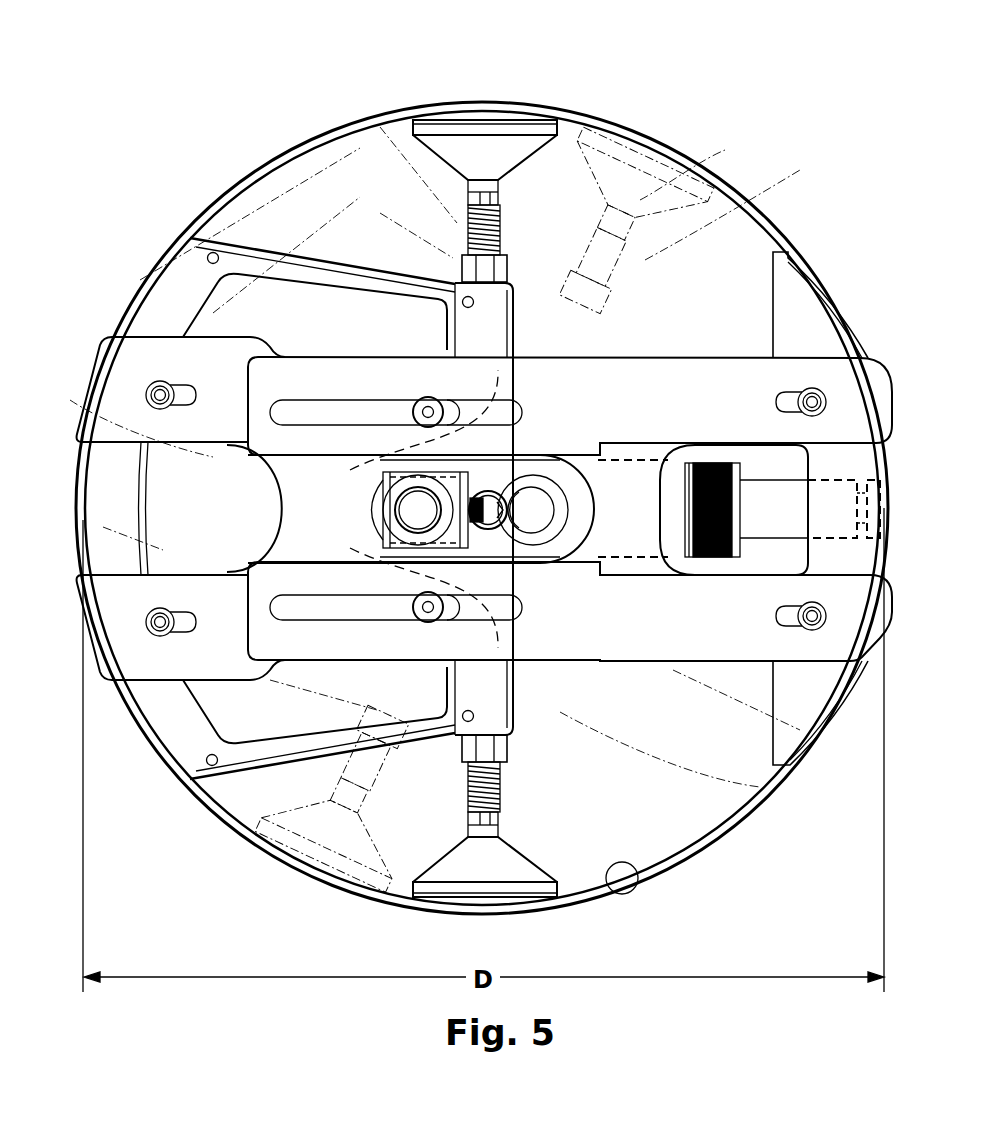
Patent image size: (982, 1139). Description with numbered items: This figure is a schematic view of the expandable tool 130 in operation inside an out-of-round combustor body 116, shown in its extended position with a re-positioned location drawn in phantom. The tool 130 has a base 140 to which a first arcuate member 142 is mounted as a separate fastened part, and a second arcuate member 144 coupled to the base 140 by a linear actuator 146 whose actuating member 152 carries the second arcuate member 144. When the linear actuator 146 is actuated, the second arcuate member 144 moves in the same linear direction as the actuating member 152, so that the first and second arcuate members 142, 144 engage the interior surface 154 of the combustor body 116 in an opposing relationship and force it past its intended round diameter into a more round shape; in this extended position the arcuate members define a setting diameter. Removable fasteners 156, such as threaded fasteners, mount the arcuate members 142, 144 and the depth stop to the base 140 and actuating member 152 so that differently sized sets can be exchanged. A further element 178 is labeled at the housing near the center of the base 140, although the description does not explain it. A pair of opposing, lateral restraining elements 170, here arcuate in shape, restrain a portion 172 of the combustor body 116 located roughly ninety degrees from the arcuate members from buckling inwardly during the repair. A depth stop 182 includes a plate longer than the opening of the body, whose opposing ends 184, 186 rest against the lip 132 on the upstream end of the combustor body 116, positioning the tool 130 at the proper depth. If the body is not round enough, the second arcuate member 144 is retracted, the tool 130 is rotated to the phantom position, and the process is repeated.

The combustor body 116 is at (684, 868).
The expandable tool 130 is at (410, 235).
The lip 132 is at (750, 814).
The base 140 is at (275, 258).
The first arcuate member 142 is at (110, 540).
The second arcuate member 144 is at (853, 468).
The linear actuator 146 is at (673, 490).
The actuating member 152 is at (770, 505).
The interior surface 154 is at (622, 888).
The removable fastener 156 is at (428, 405).
The lateral restraining elements 170 is at (482, 150).
The portion of combustor body 172 is at (455, 106).
The bearing housing 178 is at (418, 508).
The depth stop 182 is at (885, 373).
The end of plate 184 is at (878, 618).
The end of plate 186 is at (110, 378).